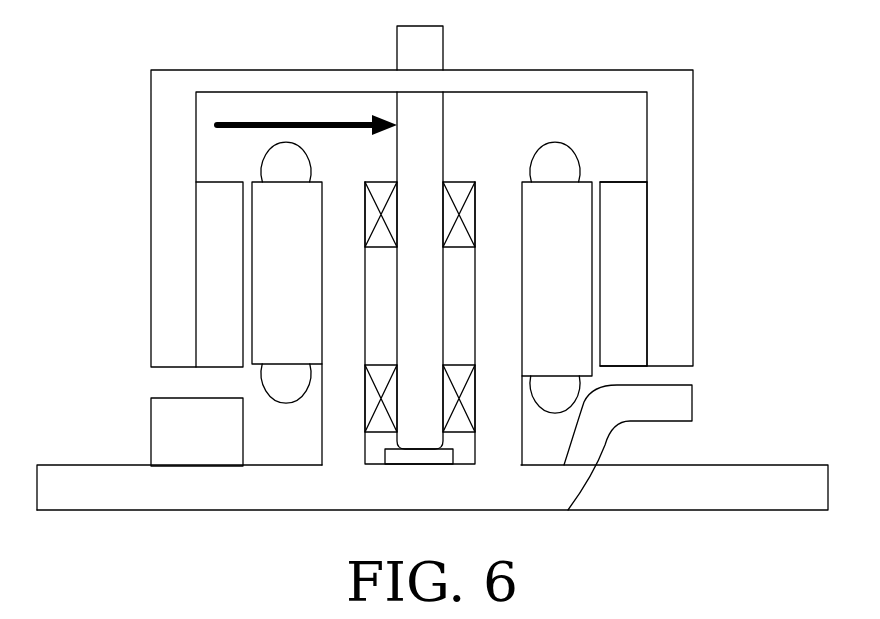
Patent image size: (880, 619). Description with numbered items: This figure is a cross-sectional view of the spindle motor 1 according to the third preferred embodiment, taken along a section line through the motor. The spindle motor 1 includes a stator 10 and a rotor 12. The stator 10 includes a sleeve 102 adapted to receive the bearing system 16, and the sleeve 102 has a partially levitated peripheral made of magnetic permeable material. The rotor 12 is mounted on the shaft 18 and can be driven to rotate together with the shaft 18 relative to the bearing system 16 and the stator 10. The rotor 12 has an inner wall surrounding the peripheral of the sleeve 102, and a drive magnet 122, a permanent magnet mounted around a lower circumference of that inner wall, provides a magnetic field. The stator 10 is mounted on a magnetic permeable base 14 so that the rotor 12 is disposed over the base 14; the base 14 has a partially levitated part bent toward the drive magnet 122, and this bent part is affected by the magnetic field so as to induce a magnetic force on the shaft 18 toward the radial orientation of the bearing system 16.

The spindle motor 1 is at (416, 268).
The stator 10 is at (505, 265).
The sleeve 102 is at (478, 350).
The rotor 12 is at (151, 127).
The drive magnet 122 is at (647, 318).
The magnetic permeable base 14 is at (68, 465).
The bearing system 16 is at (358, 223).
The shaft 18 is at (397, 58).